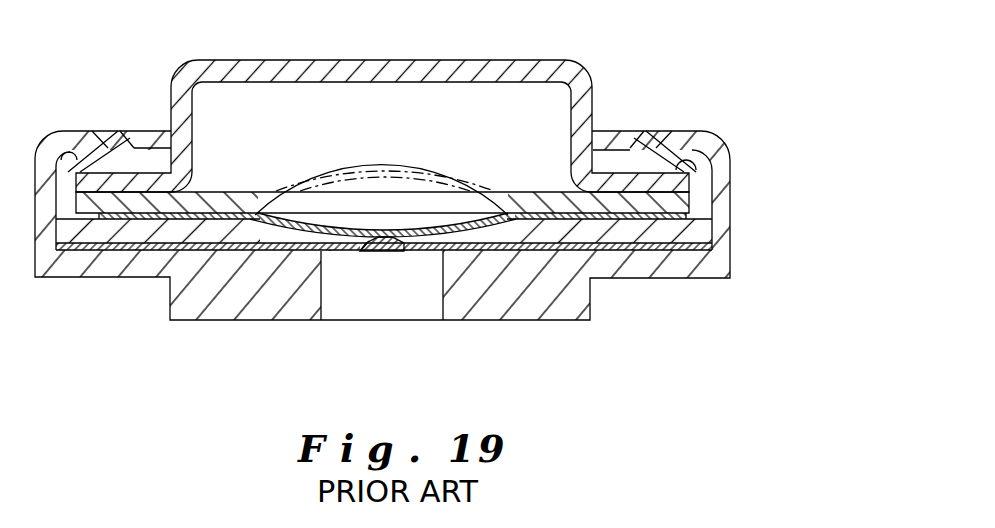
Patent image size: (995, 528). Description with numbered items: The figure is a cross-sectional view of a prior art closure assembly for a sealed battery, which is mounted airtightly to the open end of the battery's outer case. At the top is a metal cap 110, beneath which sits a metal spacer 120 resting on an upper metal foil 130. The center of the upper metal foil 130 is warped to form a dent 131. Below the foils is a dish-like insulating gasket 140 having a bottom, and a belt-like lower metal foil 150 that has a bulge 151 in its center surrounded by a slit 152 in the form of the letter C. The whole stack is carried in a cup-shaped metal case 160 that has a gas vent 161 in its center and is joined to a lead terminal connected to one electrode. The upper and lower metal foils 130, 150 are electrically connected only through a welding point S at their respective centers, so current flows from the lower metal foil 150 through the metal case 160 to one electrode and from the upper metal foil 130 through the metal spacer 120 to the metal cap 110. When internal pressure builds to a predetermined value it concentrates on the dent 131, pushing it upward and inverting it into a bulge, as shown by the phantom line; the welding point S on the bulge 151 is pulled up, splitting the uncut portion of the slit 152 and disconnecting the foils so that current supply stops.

The metal cap 110 is at (573, 63).
The metal spacer 120 is at (692, 201).
The upper metal foil 130 is at (459, 280).
The dent 131 is at (286, 228).
The insulating gasket 140 is at (698, 233).
The lower metal foil 150 is at (693, 250).
The bulge 151 is at (386, 240).
The slit 152 is at (360, 240).
The metal case 160 is at (382, 275).
The gas vent 161 is at (395, 307).
The welding point S is at (387, 238).